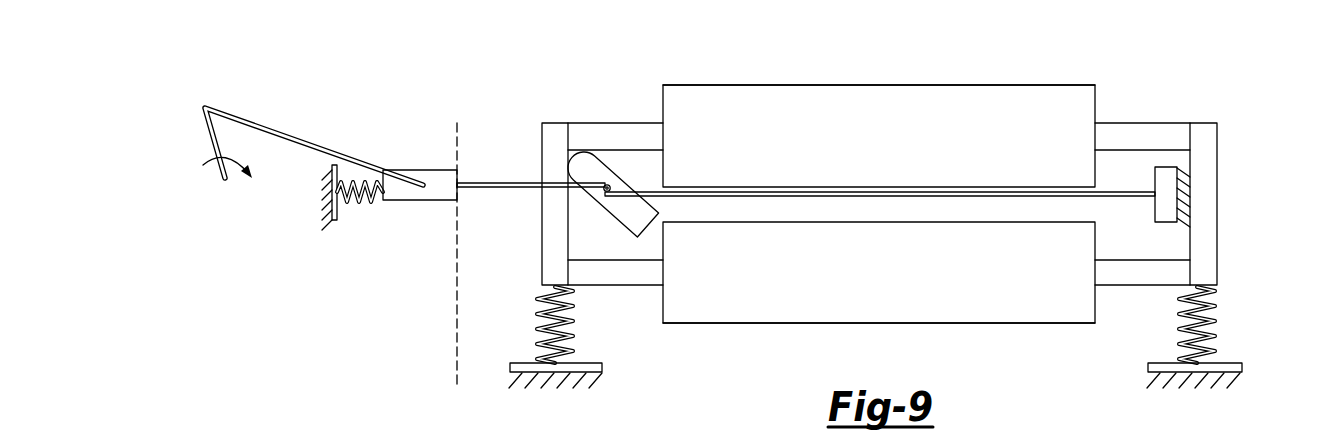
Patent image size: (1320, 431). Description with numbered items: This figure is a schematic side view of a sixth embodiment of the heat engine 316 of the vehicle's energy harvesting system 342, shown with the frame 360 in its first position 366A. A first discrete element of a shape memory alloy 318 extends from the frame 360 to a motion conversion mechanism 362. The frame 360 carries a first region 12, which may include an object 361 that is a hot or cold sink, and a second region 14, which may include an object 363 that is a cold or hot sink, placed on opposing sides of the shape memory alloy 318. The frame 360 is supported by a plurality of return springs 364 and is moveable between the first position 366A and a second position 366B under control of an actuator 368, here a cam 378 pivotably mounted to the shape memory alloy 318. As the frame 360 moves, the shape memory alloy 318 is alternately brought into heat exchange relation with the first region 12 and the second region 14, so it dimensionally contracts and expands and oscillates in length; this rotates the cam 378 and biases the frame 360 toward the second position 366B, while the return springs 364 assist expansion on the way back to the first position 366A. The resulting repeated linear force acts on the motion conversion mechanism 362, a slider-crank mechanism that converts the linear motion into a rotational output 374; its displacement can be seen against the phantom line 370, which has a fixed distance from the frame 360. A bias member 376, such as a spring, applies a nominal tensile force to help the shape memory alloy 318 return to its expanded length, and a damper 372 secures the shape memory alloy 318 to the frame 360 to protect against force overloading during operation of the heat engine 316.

The first region 12 is at (893, 150).
The second region 14 is at (893, 285).
The heat engine 316 is at (426, 103).
The shape memory alloy 318 is at (502, 182).
The energy harvesting system 342 is at (204, 236).
The frame 360 is at (1207, 255).
The object 361 is at (715, 85).
The motion conversion mechanism 362 is at (418, 203).
The object 363 is at (710, 325).
The return springs 364 is at (547, 328).
The first position 366A is at (634, 58).
The second position 366B is at (559, 428).
The actuator 368 is at (598, 168).
The phantom line 370 is at (455, 352).
The damper 372 is at (1187, 205).
The output 374 is at (267, 128).
The bias member 376 is at (352, 203).
The cam 378 is at (603, 217).